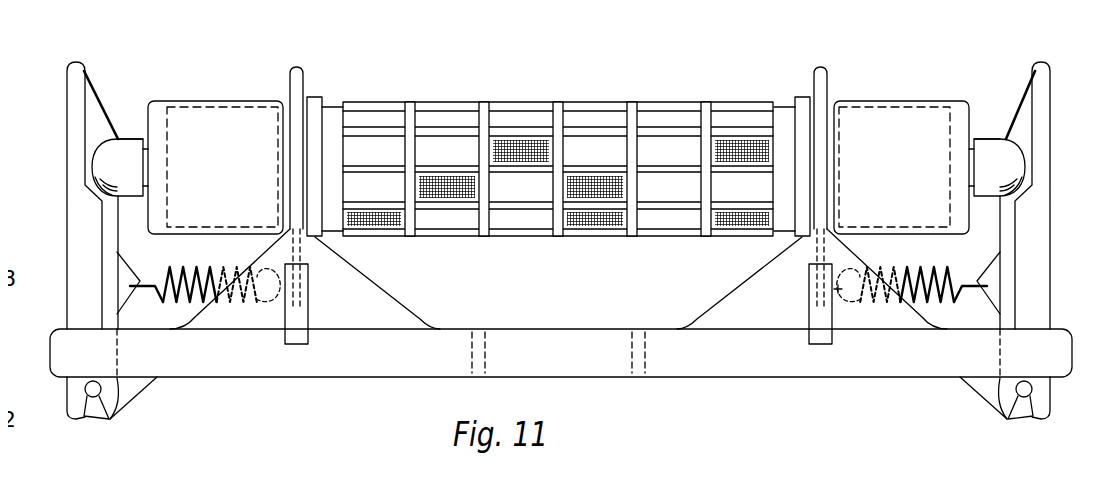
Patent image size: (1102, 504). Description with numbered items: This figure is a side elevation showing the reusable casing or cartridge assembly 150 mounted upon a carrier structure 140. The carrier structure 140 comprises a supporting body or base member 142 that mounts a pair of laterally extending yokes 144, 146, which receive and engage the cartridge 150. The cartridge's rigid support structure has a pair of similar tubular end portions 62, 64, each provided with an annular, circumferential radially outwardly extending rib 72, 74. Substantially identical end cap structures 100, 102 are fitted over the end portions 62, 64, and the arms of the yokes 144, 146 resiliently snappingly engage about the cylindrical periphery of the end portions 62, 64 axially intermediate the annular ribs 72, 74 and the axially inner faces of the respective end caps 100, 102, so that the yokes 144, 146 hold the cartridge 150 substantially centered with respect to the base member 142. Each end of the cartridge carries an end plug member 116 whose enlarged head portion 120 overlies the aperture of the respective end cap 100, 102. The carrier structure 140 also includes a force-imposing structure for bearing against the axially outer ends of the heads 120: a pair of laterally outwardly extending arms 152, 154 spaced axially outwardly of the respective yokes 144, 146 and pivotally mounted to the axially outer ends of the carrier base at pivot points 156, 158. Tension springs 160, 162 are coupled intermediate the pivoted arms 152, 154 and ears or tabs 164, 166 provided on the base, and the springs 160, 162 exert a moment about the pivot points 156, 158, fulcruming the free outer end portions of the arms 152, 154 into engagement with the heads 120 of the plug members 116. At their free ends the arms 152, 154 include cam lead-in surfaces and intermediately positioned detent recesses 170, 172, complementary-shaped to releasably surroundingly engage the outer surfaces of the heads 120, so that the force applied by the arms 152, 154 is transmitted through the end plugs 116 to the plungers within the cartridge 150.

The tubular end portion 62 is at (915, 123).
The tubular end portion 64 is at (242, 123).
The annular circumferential rib 72 is at (805, 96).
The annular circumferential rib 74 is at (308, 96).
The end cap 100 is at (886, 100).
The end cap 102 is at (180, 100).
The end plug member 116 is at (128, 136).
The head portion 120 is at (100, 157).
The carrier structure 140 is at (316, 380).
The base member 142 is at (745, 379).
The yoke 144 is at (298, 70).
The yoke 146 is at (820, 70).
The cartridge 150 is at (552, 85).
The pressing arm 152 is at (77, 227).
The pressing arm 154 is at (1032, 238).
The pivot point 156 is at (127, 417).
The pivot point 158 is at (960, 379).
The tension spring 160 is at (910, 270).
The tension spring 162 is at (207, 267).
The ear 164 is at (278, 295).
The ear 166 is at (840, 296).
The detent recess 170 is at (1010, 168).
The detent recess 172 is at (97, 172).